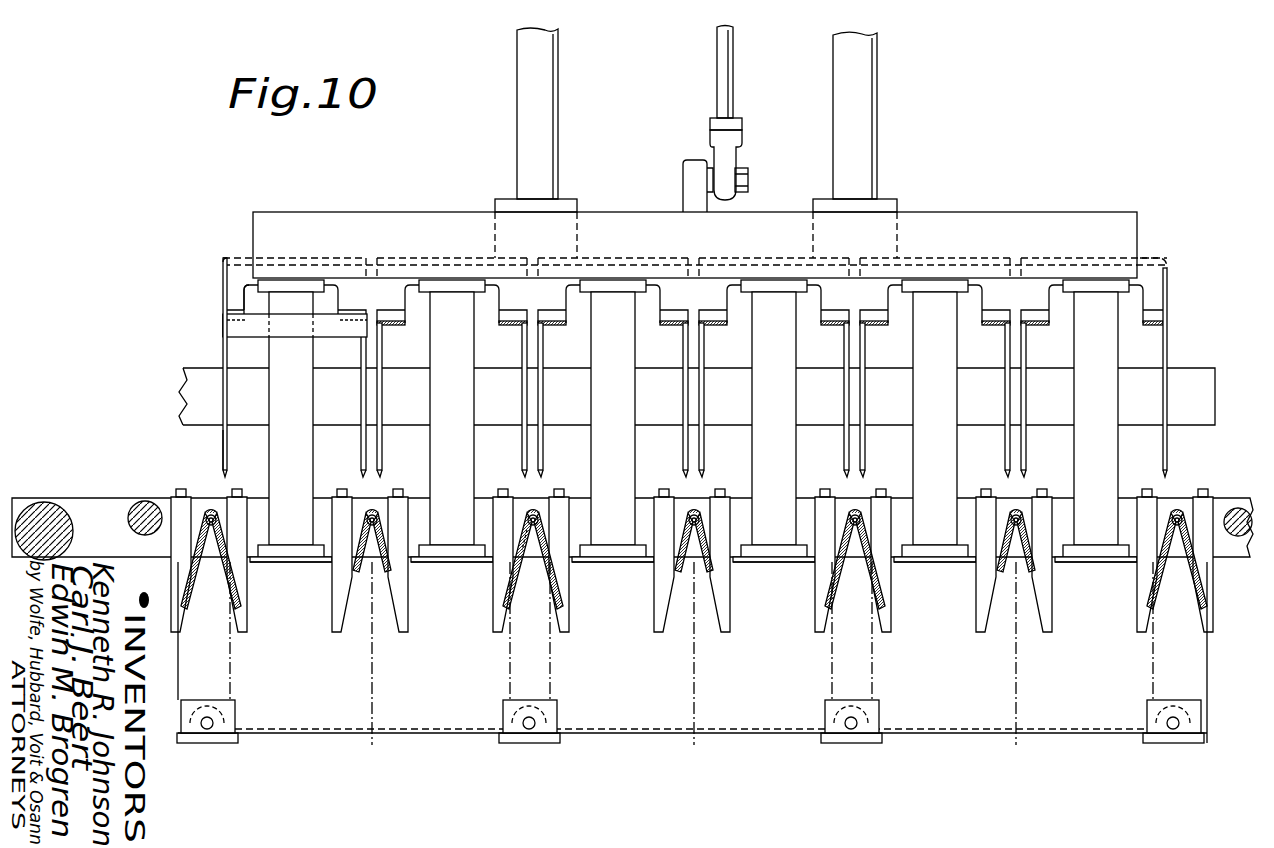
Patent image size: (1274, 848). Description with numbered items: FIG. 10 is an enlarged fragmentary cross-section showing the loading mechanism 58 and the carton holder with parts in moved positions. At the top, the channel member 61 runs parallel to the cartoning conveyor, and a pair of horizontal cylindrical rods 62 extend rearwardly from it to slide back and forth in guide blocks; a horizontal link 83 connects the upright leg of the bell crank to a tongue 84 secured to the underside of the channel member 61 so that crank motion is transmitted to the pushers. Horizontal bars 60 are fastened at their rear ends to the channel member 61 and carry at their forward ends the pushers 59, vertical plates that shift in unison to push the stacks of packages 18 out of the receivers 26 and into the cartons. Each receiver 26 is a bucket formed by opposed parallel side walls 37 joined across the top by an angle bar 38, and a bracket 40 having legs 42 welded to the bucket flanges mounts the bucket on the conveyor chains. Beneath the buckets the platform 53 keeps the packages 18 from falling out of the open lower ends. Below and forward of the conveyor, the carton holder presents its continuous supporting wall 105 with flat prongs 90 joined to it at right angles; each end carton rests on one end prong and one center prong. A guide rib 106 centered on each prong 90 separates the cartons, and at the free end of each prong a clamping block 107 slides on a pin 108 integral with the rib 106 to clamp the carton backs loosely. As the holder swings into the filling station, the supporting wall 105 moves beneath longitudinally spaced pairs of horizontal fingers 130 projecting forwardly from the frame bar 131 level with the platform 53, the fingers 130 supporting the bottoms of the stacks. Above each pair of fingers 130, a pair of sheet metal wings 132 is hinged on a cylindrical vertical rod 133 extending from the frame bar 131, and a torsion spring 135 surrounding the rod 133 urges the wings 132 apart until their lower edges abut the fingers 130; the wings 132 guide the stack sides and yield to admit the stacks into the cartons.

The loading mechanism 58 is at (487, 153).
The horizontal cylindrical rods 62 is at (558, 110).
The horizontal link 83 is at (733, 95).
The tongue 84 is at (683, 200).
The channel member 61 is at (327, 212).
The bracket 40 is at (223, 262).
The legs 42 is at (232, 309).
The side walls 37 is at (222, 357).
The angle bar 38 is at (250, 337).
The platform 53 is at (183, 368).
The receivers 26 is at (219, 442).
The horizontal bars 60 is at (1123, 395).
The frame bar 131 is at (145, 500).
The cylindrical vertical rod 133 is at (1178, 514).
The horizontal fingers 130 is at (1213, 597).
The torsion spring 135 is at (527, 552).
The sheet metal wings 132 is at (1165, 600).
The pushers 59 is at (1078, 563).
The supporting wall 105 is at (437, 733).
The prongs 90 is at (1170, 743).
The packages 18 is at (691, 668).
The guide rib 106 is at (1158, 700).
The clamping block 107 is at (1182, 705).
The pin 108 is at (1166, 722).